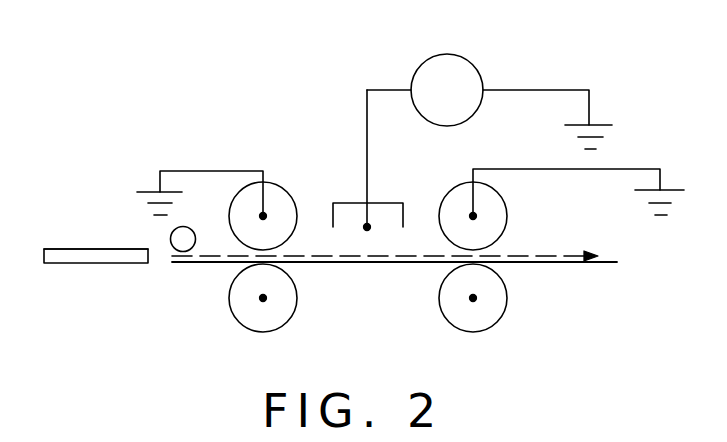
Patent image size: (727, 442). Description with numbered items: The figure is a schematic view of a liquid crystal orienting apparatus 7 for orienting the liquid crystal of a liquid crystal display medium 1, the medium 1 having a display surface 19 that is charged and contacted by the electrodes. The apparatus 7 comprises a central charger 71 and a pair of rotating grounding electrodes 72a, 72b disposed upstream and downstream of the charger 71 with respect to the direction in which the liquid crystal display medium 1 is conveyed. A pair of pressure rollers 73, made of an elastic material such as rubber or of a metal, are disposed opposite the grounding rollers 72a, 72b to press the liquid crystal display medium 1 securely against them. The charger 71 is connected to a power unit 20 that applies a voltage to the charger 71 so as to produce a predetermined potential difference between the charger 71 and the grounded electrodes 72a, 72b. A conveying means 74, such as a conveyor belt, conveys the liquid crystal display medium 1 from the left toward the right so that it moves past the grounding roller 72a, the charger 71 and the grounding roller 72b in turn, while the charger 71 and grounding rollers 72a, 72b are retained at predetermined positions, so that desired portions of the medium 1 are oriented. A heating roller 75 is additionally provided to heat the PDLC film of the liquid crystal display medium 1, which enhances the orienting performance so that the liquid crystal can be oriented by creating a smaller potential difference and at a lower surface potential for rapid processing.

The liquid crystal display medium 1 is at (81, 274).
The display surface 19 is at (73, 249).
The heating roller 75 is at (178, 245).
The conveying means 74 is at (363, 265).
The rotating grounding electrode 72a is at (284, 186).
The rotating grounding electrode 72b is at (442, 200).
The pressure rollers 73 is at (297, 307).
The charger 71 is at (347, 203).
The power unit 20 is at (472, 63).
The liquid crystal orienting apparatus 7 is at (636, 120).